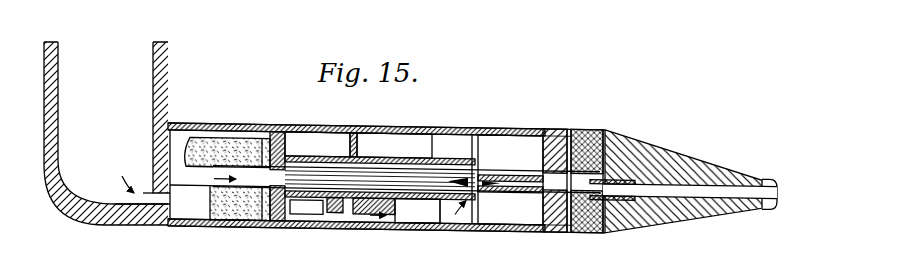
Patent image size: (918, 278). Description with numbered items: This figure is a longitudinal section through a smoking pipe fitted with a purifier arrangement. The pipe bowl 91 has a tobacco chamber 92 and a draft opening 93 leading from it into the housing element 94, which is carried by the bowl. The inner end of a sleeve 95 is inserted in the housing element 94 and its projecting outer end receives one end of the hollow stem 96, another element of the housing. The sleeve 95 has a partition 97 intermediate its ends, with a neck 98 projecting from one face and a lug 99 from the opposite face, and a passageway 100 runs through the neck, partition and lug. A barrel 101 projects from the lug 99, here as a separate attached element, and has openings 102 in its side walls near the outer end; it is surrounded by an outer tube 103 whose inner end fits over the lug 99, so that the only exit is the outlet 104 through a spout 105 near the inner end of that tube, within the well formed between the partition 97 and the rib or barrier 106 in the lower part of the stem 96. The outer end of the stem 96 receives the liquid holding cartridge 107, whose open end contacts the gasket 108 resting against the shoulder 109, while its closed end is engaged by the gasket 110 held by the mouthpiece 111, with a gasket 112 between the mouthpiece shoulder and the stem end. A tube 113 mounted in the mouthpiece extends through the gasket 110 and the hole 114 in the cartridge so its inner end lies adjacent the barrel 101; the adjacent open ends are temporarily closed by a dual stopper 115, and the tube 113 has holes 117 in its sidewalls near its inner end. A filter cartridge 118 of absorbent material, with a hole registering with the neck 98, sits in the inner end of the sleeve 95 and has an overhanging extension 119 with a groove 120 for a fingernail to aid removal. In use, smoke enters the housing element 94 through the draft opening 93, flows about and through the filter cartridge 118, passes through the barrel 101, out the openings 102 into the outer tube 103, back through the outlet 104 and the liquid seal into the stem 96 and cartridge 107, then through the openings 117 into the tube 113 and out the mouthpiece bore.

The pipe bowl 91 is at (50, 125).
The tobacco chamber 92 is at (104, 53).
The draft opening 93 is at (150, 202).
The housing element 94 is at (210, 124).
The sleeve 95 is at (342, 125).
The hollow stem 96 is at (397, 154).
The partition 97 is at (298, 154).
The neck 98 is at (279, 131).
The lug 99 is at (317, 146).
The passageway 100 is at (203, 178).
The barrel 101 is at (452, 169).
The openings 102 is at (441, 165).
The outer tube 103 is at (391, 146).
The outlet 104 is at (331, 226).
The spout 105 is at (301, 226).
The rib or barrier 106 is at (373, 226).
The liquid holding cartridge 107 is at (553, 227).
The gasket 108 is at (479, 130).
The shoulder 109 is at (463, 226).
The gasket 110 is at (582, 228).
The mouthpiece 111 is at (676, 206).
The gasket 112 is at (605, 229).
The tube 113 is at (632, 176).
The hole 114 is at (561, 124).
The dual stopper 115 is at (446, 226).
The holes 117 is at (508, 163).
The filter cartridge 118 is at (266, 137).
The overhanging extension 119 is at (185, 151).
The groove 120 is at (247, 137).